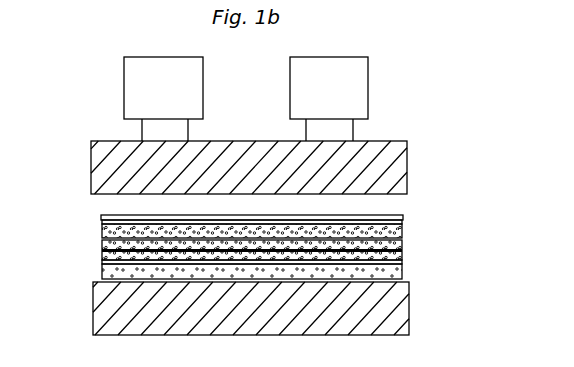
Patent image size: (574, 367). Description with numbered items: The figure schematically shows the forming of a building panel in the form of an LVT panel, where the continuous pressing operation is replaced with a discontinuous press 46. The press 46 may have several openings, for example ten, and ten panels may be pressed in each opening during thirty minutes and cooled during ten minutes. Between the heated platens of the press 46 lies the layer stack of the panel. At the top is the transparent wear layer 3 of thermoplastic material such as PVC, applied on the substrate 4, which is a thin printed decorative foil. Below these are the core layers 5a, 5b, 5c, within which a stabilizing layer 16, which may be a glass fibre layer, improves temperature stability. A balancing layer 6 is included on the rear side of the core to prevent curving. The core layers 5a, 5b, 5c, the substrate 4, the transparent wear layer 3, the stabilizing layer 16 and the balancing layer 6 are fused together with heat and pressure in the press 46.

The transparent wear layer 3 is at (403, 216).
The substrate 4 is at (402, 222).
The core layer 5a is at (402, 233).
The core layer 5b is at (402, 252).
The core layer 5c is at (102, 261).
The balancing layer 6 is at (102, 268).
The stabilizing layer 16 is at (102, 250).
The discontinuous press 46 is at (400, 119).